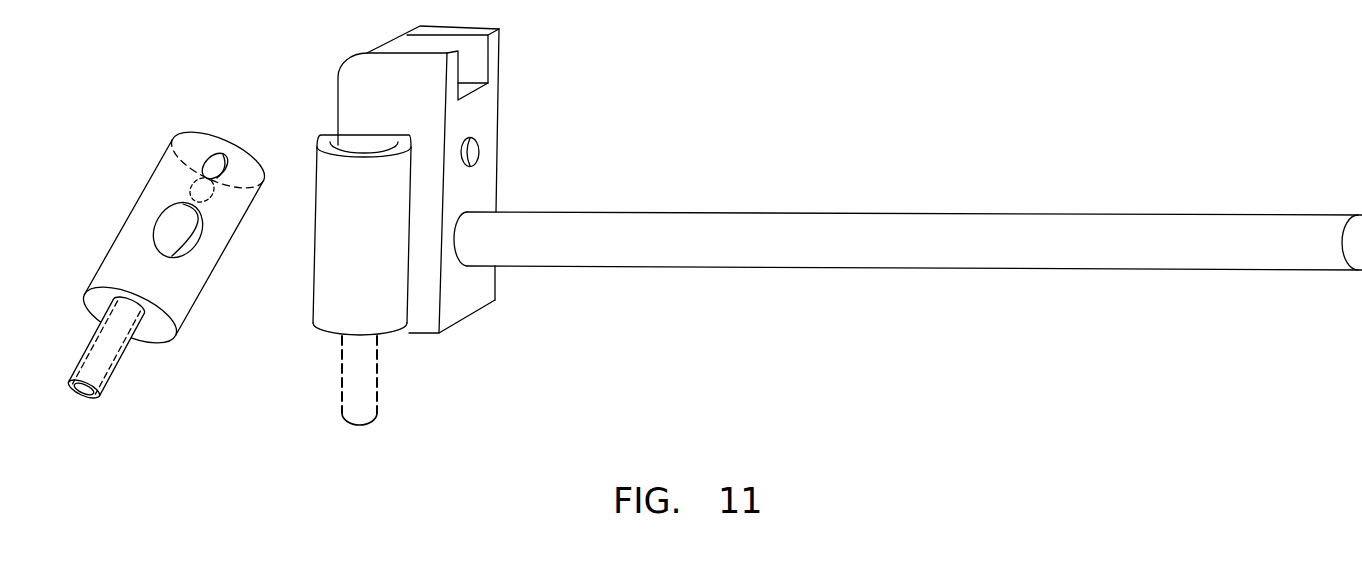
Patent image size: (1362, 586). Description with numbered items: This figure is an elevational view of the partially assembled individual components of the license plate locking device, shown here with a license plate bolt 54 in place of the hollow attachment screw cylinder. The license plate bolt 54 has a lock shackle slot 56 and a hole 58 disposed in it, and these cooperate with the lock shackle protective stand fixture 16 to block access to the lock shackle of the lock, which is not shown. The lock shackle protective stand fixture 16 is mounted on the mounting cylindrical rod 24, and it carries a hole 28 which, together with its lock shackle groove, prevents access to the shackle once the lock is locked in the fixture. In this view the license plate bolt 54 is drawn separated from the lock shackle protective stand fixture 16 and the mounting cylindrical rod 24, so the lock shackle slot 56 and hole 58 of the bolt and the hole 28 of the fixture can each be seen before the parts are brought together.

The lock shackle protective stand fixture 16 is at (500, 95).
The mounting cylindrical rod 24 is at (770, 213).
The hole 28 is at (479, 153).
The license plate bolt 54 is at (147, 183).
The lock shackle slot 56 is at (227, 165).
The hole 58 is at (205, 198).